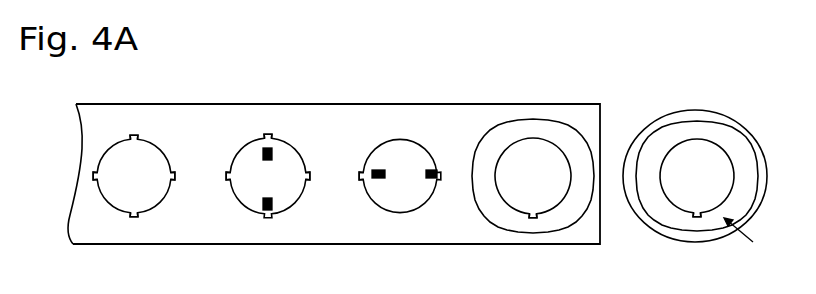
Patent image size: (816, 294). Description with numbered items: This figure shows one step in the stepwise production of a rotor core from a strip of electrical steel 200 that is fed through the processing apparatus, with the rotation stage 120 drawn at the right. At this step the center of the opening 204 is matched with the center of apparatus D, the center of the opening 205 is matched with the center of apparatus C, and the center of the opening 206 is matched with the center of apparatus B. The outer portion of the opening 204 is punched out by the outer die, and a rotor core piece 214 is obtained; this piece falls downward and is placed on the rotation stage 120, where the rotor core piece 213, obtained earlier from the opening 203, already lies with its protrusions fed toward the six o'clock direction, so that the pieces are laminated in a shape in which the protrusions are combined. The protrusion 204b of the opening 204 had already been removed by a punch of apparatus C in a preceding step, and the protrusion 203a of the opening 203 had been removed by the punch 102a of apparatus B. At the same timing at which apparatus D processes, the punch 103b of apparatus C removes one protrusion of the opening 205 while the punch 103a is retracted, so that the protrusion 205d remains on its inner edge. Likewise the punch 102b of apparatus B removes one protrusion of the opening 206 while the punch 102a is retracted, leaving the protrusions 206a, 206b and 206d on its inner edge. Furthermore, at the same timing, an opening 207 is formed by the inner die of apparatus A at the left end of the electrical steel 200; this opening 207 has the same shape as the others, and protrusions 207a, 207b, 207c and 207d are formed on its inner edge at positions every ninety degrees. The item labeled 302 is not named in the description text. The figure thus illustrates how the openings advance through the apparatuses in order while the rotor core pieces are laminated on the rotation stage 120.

The electrical steel 200 is at (457, 112).
The opening 207 is at (158, 156).
The protrusion 207a is at (133, 136).
The protrusion 207b is at (175, 180).
The protrusion 207c is at (134, 217).
The protrusion 207d is at (93, 180).
The opening 206 is at (291, 158).
The protrusion 206a is at (267, 136).
The protrusion 206b is at (309, 180).
The protrusion 206d is at (227, 180).
The punch 102a is at (272, 148).
The punch 102b is at (270, 211).
The opening 205 is at (412, 145).
The protrusion 205d is at (361, 180).
The punch 103a is at (380, 170).
The punch 103b is at (438, 179).
The opening 204 is at (513, 205).
The protrusion 204b is at (536, 216).
The rotor core piece 214 is at (530, 124).
The rotation stage 120 is at (650, 127).
The rotor core piece 213 is at (733, 147).
The opening 203 is at (667, 198).
The protrusion 203a is at (696, 217).
The side surface 302 is at (753, 237).